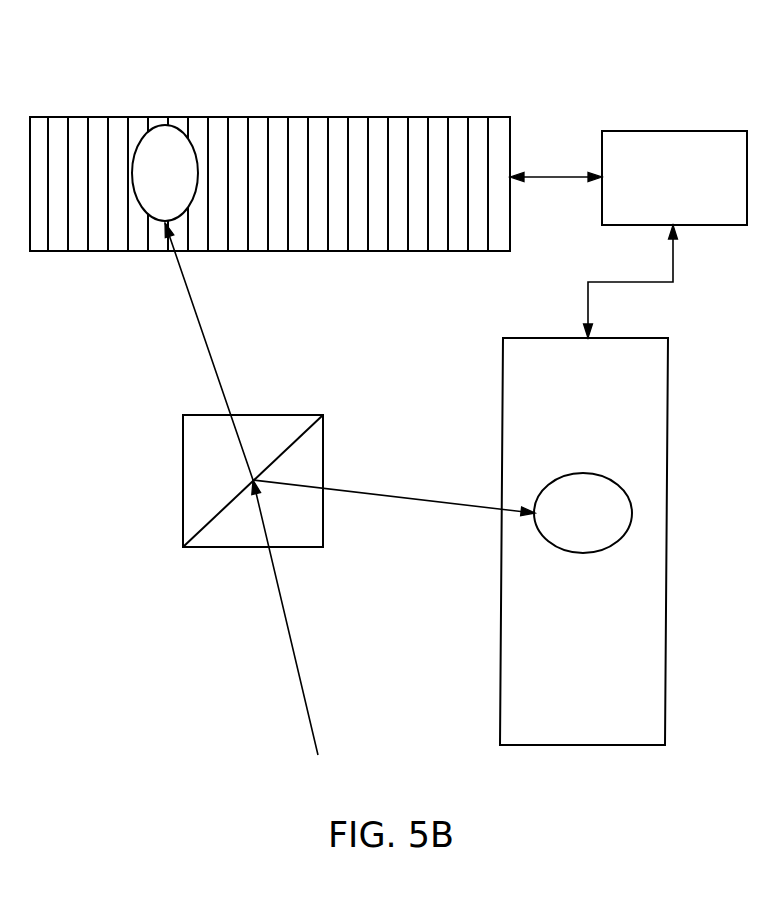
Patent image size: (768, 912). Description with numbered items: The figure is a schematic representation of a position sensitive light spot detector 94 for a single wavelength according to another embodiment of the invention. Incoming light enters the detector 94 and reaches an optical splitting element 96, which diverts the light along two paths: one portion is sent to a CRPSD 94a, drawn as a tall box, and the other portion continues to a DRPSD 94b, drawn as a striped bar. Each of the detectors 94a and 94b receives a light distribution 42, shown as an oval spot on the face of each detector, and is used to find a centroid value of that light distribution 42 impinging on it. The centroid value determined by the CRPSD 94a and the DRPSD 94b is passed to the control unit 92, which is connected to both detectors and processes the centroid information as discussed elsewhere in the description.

The light distribution 42 is at (165, 117).
The control unit 92 is at (673, 131).
The position sensitive light spot detector 94 is at (204, 648).
The CRPSD 94a is at (502, 642).
The DRPSD 94b is at (310, 117).
The optical splitting element 96 is at (181, 478).